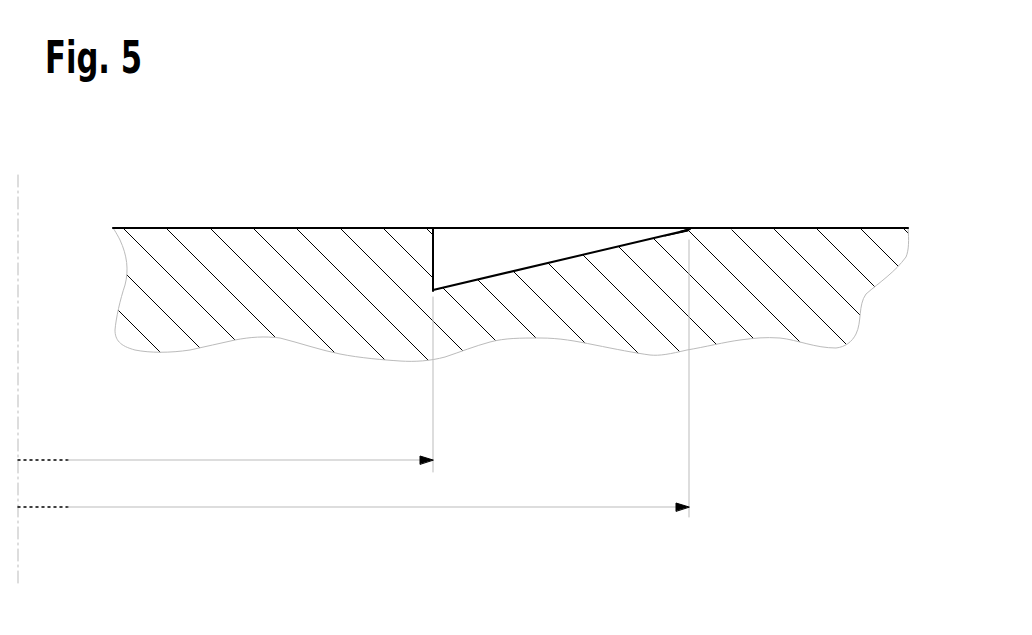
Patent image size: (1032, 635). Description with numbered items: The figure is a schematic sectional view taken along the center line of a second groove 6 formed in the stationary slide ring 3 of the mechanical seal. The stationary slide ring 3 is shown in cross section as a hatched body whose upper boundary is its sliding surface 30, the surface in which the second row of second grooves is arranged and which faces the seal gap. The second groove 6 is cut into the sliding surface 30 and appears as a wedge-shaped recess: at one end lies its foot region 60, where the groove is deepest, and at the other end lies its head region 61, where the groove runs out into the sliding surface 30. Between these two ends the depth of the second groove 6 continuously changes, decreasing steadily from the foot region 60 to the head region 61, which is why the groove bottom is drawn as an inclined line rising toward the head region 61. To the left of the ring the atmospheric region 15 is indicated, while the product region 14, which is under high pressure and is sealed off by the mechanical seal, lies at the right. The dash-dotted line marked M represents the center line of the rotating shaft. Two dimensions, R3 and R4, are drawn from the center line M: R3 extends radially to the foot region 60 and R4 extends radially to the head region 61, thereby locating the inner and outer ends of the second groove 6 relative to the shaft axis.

The stationary slide ring 3 is at (780, 243).
The sliding surface 30 is at (148, 226).
The second groove 6 is at (545, 241).
The foot region 60 is at (447, 262).
The head region 61 is at (688, 231).
The product region 14 is at (936, 210).
The atmospheric region 15 is at (79, 252).
The center line M is at (18, 575).
The radius to inner wall of recess R3 is at (225, 384).
The radius to outer edge of recess R4 is at (353, 378).